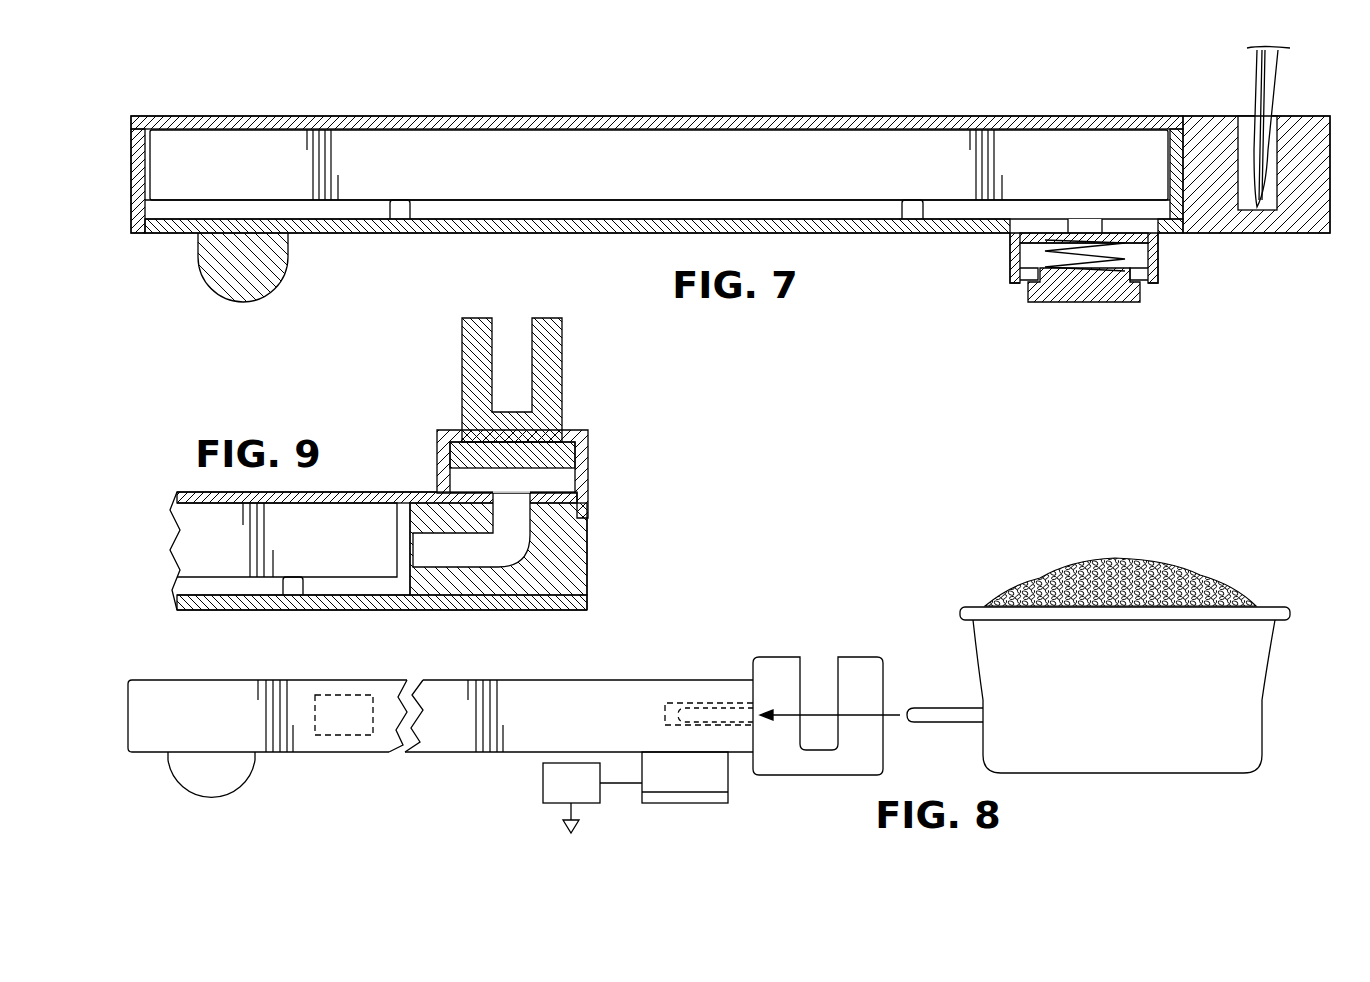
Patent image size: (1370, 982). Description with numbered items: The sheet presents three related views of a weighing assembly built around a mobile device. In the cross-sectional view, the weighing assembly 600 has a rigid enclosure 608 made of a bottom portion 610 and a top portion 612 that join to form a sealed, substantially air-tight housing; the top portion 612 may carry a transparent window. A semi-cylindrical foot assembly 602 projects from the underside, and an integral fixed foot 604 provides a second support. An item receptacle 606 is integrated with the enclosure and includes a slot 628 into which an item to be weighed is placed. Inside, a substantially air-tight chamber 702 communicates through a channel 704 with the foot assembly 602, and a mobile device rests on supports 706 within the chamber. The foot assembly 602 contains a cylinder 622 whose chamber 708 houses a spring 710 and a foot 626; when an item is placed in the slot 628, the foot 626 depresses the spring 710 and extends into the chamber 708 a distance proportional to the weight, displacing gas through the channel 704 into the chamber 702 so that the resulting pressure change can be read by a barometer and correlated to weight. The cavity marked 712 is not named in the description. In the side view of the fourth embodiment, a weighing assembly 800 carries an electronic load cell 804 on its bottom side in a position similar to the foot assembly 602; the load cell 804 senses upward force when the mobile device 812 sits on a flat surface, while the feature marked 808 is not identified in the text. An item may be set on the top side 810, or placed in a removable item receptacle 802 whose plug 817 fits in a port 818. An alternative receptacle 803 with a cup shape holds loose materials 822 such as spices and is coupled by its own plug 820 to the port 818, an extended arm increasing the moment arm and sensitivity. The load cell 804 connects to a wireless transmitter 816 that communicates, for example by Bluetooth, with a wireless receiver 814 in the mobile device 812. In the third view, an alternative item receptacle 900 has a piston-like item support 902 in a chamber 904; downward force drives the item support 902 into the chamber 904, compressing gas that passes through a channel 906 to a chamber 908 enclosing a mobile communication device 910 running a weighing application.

In FIG. 7, the weighing assembly 600 is at (412, 96).
In FIG. 7, the semi-cylindrical foot assembly 602 is at (1094, 310).
In FIG. 7, the integral fixed foot 604 is at (243, 300).
In FIG. 7, the item receptacle 606 is at (1305, 114).
In FIG. 7, the rigid enclosure 608 is at (225, 111).
In FIG. 7, the bottom portion 610 is at (130, 217).
In FIG. 7, the top portion 612 is at (131, 135).
In FIG. 7, the cylinder 622 is at (1010, 262).
In FIG. 7, the foot 626 is at (1140, 296).
In FIG. 7, the slot 628 is at (1242, 126).
In FIG. 7, the chamber 702 is at (520, 207).
In FIG. 7, the channel 704 is at (1085, 225).
In FIG. 7, the supports 706 is at (410, 210).
In FIG. 7, the chamber 708 is at (1033, 240).
In FIG. 7, the spring 710 is at (1147, 257).
In FIG. 7, the interior cavity 712 is at (640, 178).
In FIG. 9, the alternative item receptacle 900 is at (356, 436).
In FIG. 9, the item support 902 is at (562, 368).
In FIG. 9, the chamber 904 is at (565, 479).
In FIG. 9, the channel 906 is at (427, 548).
In FIG. 9, the chamber 908 is at (215, 587).
In FIG. 9, the mobile communication device 910 is at (320, 554).
In FIG. 8, the weighing assembly 800 is at (758, 594).
In FIG. 8, the removable item receptacle 802 is at (862, 657).
In FIG. 8, the alternative receptacle 803 is at (1262, 713).
In FIG. 8, the electronic load cell 804 is at (698, 805).
In FIG. 8, the button 808 is at (207, 803).
In FIG. 8, the top side 810 is at (667, 680).
In FIG. 8, the mobile device 812 is at (227, 731).
In FIG. 8, the wireless receiver 814 is at (345, 695).
In FIG. 8, the wireless transmitter 816 is at (543, 783).
In FIG. 8, the plug 817 is at (718, 702).
In FIG. 8, the port 818 is at (660, 712).
In FIG. 8, the plug 820 is at (950, 708).
In FIG. 8, the loose materials 822 is at (1175, 578).